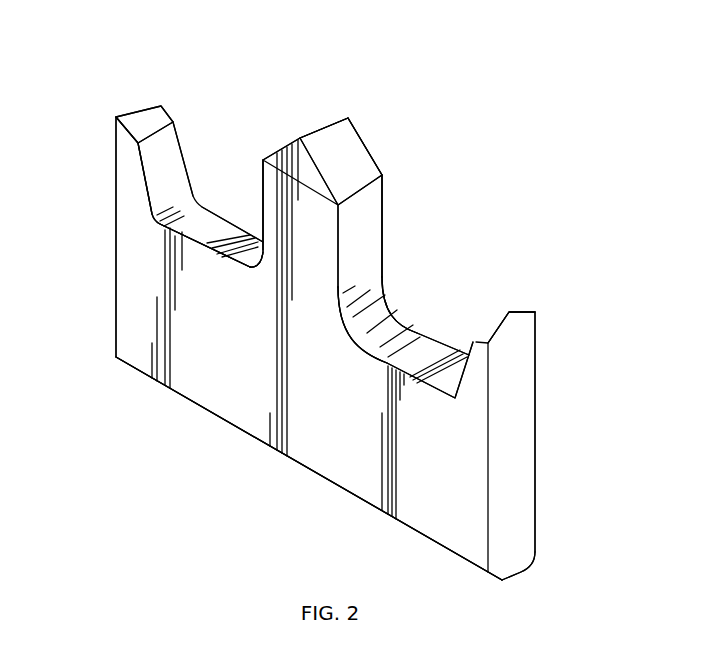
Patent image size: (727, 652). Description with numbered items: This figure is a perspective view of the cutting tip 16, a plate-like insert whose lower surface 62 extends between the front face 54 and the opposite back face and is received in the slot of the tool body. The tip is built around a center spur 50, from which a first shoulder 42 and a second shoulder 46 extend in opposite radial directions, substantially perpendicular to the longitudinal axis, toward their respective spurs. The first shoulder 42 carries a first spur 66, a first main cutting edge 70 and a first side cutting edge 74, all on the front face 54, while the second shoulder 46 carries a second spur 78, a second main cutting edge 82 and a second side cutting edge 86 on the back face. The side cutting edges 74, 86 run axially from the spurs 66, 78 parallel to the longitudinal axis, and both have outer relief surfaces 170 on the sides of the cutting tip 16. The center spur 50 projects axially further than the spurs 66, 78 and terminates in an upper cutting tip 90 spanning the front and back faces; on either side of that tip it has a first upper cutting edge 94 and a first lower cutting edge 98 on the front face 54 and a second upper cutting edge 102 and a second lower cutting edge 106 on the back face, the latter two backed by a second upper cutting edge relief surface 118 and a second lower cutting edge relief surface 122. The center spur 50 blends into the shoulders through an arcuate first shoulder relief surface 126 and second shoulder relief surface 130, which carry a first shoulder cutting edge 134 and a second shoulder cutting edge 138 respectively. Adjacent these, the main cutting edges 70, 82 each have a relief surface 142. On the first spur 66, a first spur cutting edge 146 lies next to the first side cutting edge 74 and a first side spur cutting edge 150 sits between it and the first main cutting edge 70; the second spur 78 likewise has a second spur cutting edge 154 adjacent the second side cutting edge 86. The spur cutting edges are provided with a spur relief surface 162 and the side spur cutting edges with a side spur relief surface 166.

The cutting tip 16 is at (147, 471).
The first shoulder 42 is at (226, 52).
The second shoulder 46 is at (527, 186).
The center spur 50 is at (406, 54).
The front face 54 is at (260, 408).
The lower surface 62 is at (300, 466).
The first spur 66 is at (104, 64).
The first main cutting edge 70 is at (195, 245).
The first side cutting edge 74 is at (116, 254).
The second spur 78 is at (585, 264).
The second main cutting edge 82 is at (433, 337).
The second side cutting edge 86 is at (535, 451).
The upper cutting tip 90 is at (328, 124).
The first upper cutting edge 94 is at (288, 143).
The first lower cutting edge 98 is at (263, 183).
The second upper cutting edge 102 is at (357, 130).
The second lower cutting edge 106 is at (384, 205).
The second upper cutting edge relief surface 118 is at (363, 167).
The second lower cutting edge relief surface 122 is at (368, 238).
The first shoulder relief surface 126 is at (246, 256).
The second shoulder relief surface 130 is at (380, 289).
The first shoulder cutting edge 134 is at (255, 268).
The second shoulder cutting edge 138 is at (400, 307).
The relief surface 142 is at (204, 217).
The first spur cutting edge 146 is at (118, 132).
The first side spur cutting edge 150 is at (142, 176).
The second spur cutting edge 154 is at (524, 313).
The spur relief surface 162 is at (141, 120).
The side spur relief surface 166 is at (172, 152).
The outer relief surface 170 is at (520, 511).